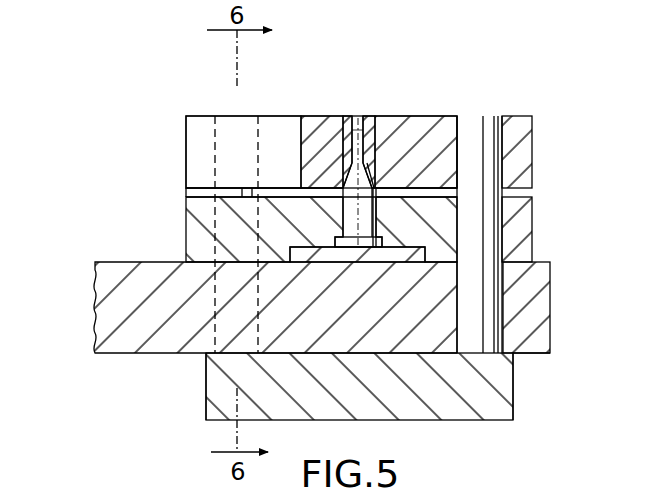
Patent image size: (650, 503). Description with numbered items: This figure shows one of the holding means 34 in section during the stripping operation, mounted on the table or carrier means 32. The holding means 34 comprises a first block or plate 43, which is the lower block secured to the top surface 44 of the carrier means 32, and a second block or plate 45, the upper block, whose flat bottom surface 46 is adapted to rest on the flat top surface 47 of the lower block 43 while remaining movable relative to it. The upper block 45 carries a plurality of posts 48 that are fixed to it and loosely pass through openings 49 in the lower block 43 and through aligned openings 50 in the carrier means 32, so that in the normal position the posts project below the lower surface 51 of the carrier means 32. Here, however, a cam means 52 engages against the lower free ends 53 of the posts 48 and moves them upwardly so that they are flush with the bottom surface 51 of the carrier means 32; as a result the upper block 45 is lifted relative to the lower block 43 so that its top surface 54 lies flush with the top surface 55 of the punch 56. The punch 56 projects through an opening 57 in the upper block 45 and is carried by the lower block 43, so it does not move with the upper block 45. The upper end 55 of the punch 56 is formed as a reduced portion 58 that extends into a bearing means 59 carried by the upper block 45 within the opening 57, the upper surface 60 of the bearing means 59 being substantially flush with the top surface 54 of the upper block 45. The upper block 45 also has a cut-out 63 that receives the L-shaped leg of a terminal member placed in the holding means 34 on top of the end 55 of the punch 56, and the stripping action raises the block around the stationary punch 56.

The table or carrier means 32 is at (95, 300).
The holding means 34 is at (173, 112).
The first block or plate 43 is at (522, 225).
The top surface 44 is at (122, 262).
The second block or plate 45 is at (528, 145).
The flat bottom surface 46 is at (187, 194).
The flat top surface 47 is at (515, 190).
The posts 48 is at (502, 245).
The openings 49 is at (505, 210).
The aligned openings 50 is at (520, 303).
The lower surface 51 is at (527, 355).
The cam means 52 is at (217, 400).
The lower free ends 53 is at (513, 400).
The top surface 54 is at (302, 115).
The top surface 55 is at (358, 116).
The punch 56 is at (394, 116).
The opening 57 is at (372, 156).
The reduced portion 58 is at (351, 135).
The bearing means 59 is at (348, 143).
The upper surface 60 is at (371, 116).
The cut-out 63 is at (298, 142).